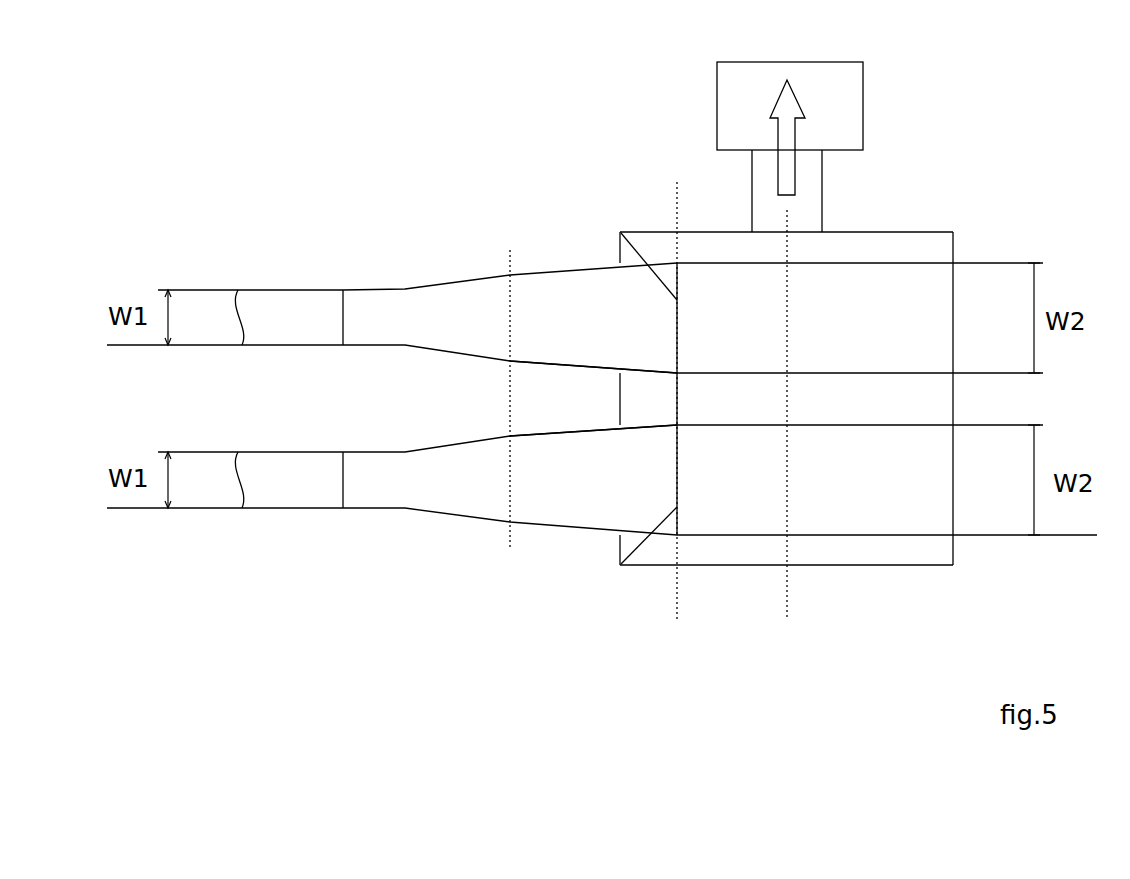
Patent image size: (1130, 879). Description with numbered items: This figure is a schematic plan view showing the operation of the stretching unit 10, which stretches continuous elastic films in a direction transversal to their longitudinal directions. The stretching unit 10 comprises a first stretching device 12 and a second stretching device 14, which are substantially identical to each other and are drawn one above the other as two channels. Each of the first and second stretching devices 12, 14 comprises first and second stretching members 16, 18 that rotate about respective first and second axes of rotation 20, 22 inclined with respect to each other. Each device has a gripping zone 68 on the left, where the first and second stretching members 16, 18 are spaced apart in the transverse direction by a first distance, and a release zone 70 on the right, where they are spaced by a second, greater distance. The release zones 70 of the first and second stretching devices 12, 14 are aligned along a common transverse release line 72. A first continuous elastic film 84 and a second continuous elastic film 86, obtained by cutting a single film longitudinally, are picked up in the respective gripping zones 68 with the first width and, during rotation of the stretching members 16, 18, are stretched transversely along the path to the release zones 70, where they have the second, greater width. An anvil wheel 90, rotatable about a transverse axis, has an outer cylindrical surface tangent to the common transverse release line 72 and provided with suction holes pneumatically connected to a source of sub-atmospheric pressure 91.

The stretching unit 10 is at (602, 338).
The first stretching device 12 is at (242, 557).
The second stretching device 14 is at (602, 387).
The first stretching member 16 is at (405, 345).
The second stretching member 18 is at (413, 290).
The first axis of rotation 20 is at (510, 367).
The second axis of rotation 22 is at (510, 252).
The gripping zone 68 is at (343, 305).
The release zone 70 is at (677, 300).
The common transverse release line 72 is at (677, 208).
The first continuous elastic film 84 is at (262, 488).
The second continuous elastic film 86 is at (270, 310).
The anvil wheel 90 is at (787, 376).
The source of sub-atmospheric pressure 91 is at (857, 90).